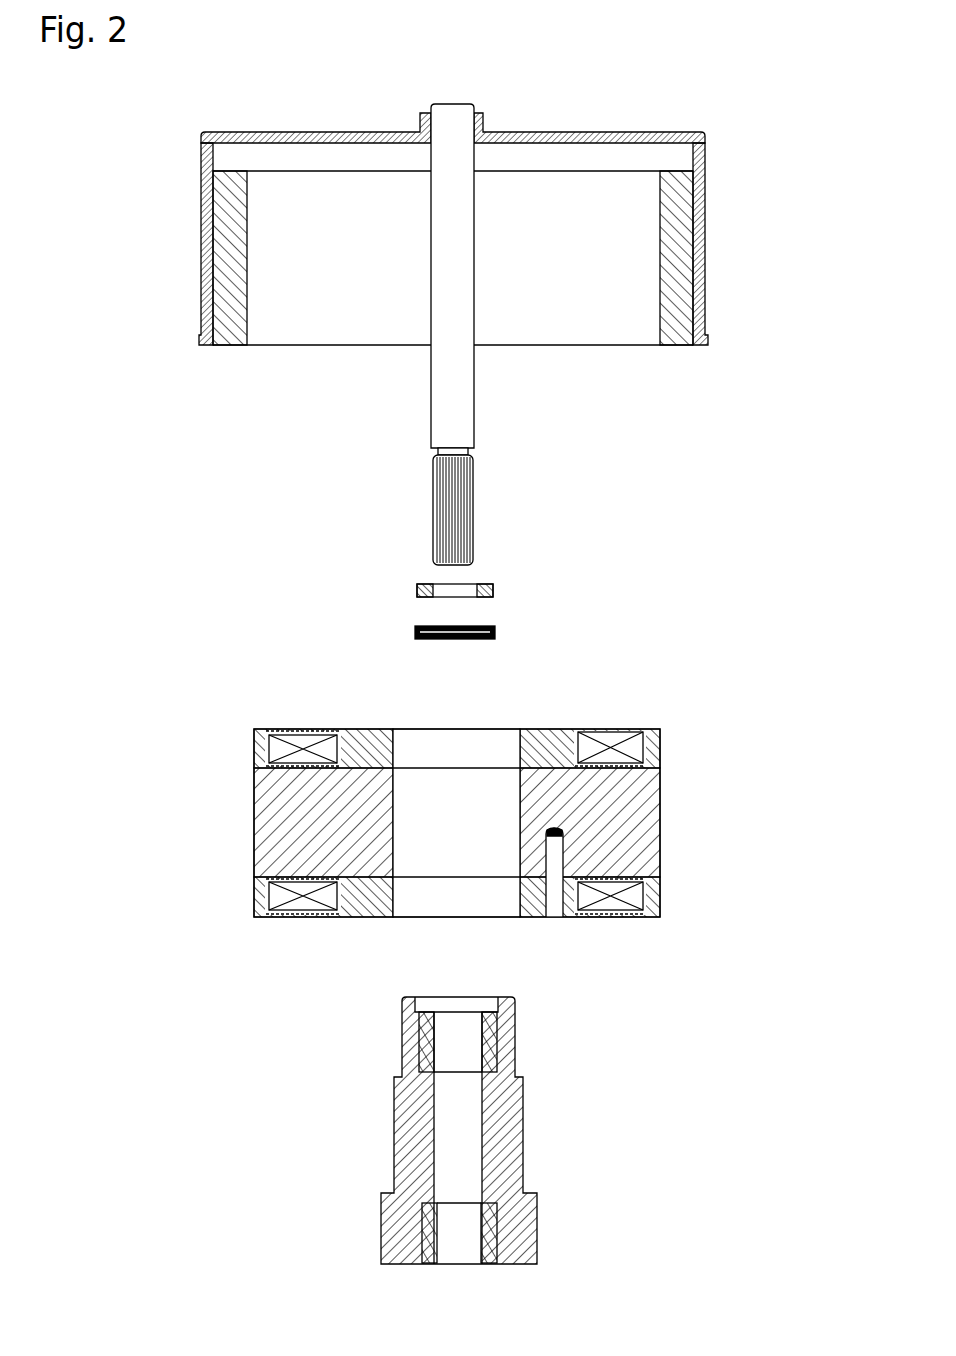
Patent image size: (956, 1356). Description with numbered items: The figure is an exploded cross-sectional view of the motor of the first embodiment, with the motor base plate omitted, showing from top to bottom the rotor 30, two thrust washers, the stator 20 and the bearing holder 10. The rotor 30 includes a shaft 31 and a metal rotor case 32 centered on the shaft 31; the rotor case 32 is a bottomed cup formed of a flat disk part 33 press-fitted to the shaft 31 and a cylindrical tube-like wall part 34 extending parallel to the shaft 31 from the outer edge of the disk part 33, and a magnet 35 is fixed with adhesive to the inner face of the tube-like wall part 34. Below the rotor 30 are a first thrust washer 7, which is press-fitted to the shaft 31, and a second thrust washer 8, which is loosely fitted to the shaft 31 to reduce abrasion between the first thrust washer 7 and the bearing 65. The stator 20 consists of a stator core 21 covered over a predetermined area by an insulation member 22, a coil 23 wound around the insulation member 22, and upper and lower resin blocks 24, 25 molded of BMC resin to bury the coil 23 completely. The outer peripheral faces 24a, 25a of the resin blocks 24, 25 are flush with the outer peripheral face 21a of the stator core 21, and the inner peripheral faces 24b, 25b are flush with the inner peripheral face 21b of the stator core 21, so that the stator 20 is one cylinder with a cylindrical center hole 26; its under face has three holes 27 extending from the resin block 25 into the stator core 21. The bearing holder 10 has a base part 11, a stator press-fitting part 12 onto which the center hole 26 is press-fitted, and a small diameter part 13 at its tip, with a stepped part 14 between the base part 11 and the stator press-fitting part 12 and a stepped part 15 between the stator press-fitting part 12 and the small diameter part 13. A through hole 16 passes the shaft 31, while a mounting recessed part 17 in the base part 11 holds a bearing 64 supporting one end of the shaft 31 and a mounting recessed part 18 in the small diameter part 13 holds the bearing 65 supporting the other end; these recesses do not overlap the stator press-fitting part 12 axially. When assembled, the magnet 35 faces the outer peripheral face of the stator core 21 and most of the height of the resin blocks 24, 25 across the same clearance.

The first thrust washer 7 is at (493, 588).
The second thrust washer 8 is at (495, 633).
The bearing holder 10 is at (475, 1132).
The base part 11 is at (382, 1228).
The stator press-fitting part 12 is at (395, 1113).
The small diameter part 13 is at (400, 1008).
The stepped part 14 is at (388, 1193).
The stepped part 15 is at (400, 1075).
The through hole 16 is at (472, 1152).
The mounting recessed part 17 is at (454, 1261).
The mounting recessed part 18 is at (422, 1047).
The stator 20 is at (472, 821).
The stator core 21 is at (449, 822).
The outer peripheral face 21a is at (253, 822).
The inner peripheral face 21b is at (393, 826).
The insulation member 22 is at (627, 773).
The coil 23 is at (607, 745).
The resin block 24 is at (408, 716).
The outer peripheral face 24a is at (253, 745).
The inner peripheral face 24b is at (395, 755).
The resin block 25 is at (450, 865).
The outer peripheral face 25a is at (253, 897).
The inner peripheral face 25b is at (393, 900).
The center hole 26 is at (456, 791).
The hole 27 is at (553, 905).
The rotor 30 is at (468, 314).
The shaft 31 is at (460, 410).
The rotor case 32 is at (452, 204).
The disk part 33 is at (268, 132).
The tube-like wall part 34 is at (706, 274).
The magnet 35 is at (683, 262).
The bearing 64 is at (427, 1243).
The bearing 65 is at (490, 1022).